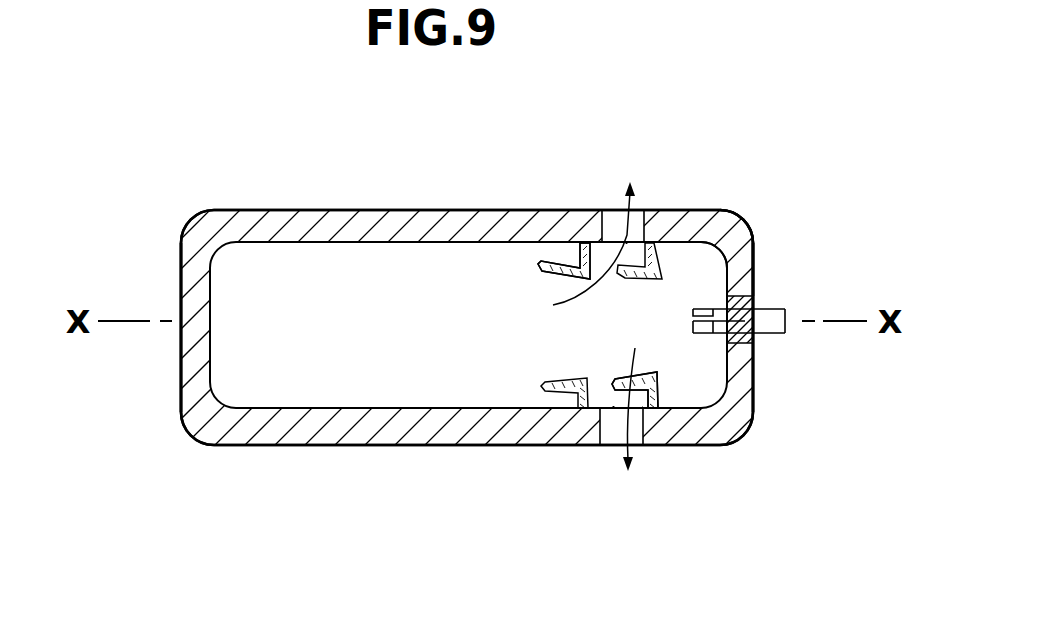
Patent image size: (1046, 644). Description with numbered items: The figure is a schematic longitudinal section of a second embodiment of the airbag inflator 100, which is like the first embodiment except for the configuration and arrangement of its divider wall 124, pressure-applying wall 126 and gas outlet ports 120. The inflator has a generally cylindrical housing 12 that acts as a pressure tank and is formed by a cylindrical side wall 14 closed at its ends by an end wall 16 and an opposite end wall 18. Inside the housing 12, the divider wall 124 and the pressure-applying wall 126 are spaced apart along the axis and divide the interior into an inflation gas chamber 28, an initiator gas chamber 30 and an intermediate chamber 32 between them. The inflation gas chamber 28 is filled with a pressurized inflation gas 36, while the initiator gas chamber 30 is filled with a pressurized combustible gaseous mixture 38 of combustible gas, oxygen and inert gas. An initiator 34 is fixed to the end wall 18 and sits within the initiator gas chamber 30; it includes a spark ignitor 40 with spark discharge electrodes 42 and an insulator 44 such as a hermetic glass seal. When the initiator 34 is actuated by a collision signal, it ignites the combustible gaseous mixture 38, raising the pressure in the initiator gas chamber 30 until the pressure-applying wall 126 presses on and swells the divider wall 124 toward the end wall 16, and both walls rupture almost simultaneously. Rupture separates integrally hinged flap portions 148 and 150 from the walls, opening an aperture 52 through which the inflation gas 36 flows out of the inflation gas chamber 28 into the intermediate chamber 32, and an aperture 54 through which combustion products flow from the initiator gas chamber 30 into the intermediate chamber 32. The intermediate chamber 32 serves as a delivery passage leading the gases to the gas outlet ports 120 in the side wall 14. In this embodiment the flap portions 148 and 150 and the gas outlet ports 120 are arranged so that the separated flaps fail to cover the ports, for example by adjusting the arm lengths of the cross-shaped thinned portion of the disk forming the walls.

The airbag inflator 100 is at (412, 186).
The housing 12 is at (276, 210).
The cylindrical side wall 14 is at (249, 210).
The end wall 16 is at (181, 300).
The end wall 18 is at (755, 275).
The inflation gas chamber 28 is at (318, 265).
The initiator gas chamber 30 is at (700, 268).
The intermediate chamber 32 is at (663, 385).
The initiator 34 is at (782, 350).
The pressurized inflation gas 36 is at (333, 275).
The pressurized combustible gaseous mixture 38 is at (750, 272).
The spark ignitor 40 is at (757, 307).
The spark discharge electrodes 42 is at (695, 309).
The insulator 44 is at (770, 323).
The aperture 52 is at (598, 265).
The aperture 54 is at (660, 363).
The gas outlet ports 120 is at (611, 215).
The divider wall 124 is at (585, 258).
The pressure-applying wall 126 is at (682, 250).
The integrally hinged flap portions 148 is at (550, 276).
The integrally hinged flap portions 150 is at (640, 272).